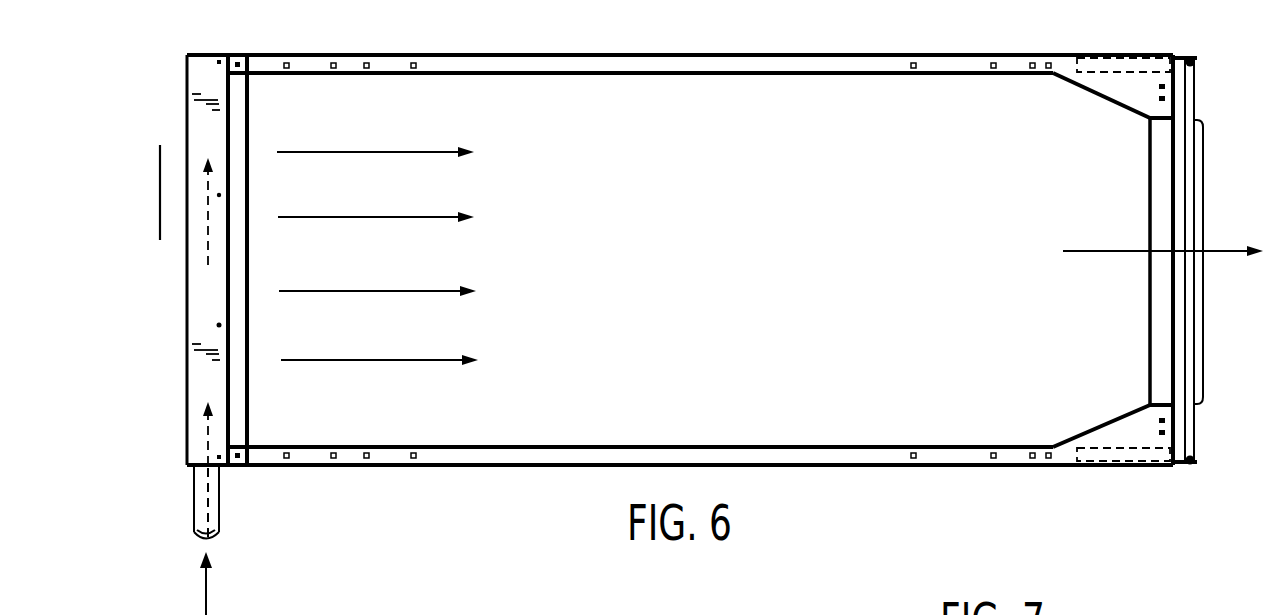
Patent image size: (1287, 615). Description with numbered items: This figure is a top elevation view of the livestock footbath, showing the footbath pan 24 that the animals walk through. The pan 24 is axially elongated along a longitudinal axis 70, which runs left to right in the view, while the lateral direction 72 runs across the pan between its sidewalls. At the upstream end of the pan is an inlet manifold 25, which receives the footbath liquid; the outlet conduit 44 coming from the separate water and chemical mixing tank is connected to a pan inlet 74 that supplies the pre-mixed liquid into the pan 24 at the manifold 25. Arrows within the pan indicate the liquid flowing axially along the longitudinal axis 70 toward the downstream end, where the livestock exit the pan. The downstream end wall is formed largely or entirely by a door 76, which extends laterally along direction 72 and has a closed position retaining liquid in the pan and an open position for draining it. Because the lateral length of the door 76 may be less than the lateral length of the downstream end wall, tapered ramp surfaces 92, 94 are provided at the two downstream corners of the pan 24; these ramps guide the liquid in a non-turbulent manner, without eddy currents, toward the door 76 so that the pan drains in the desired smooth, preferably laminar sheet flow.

The footbath pan 24 is at (700, 63).
The inlet manifold 25 is at (217, 143).
The outlet conduit 44 is at (193, 512).
The longitudinal axis 70 is at (1116, 250).
The lateral direction 72 is at (160, 168).
The pan inlet 74 is at (220, 468).
The door 76 is at (1203, 142).
The tapered ramp surface 92 is at (1098, 95).
The tapered ramp surface 94 is at (1125, 416).